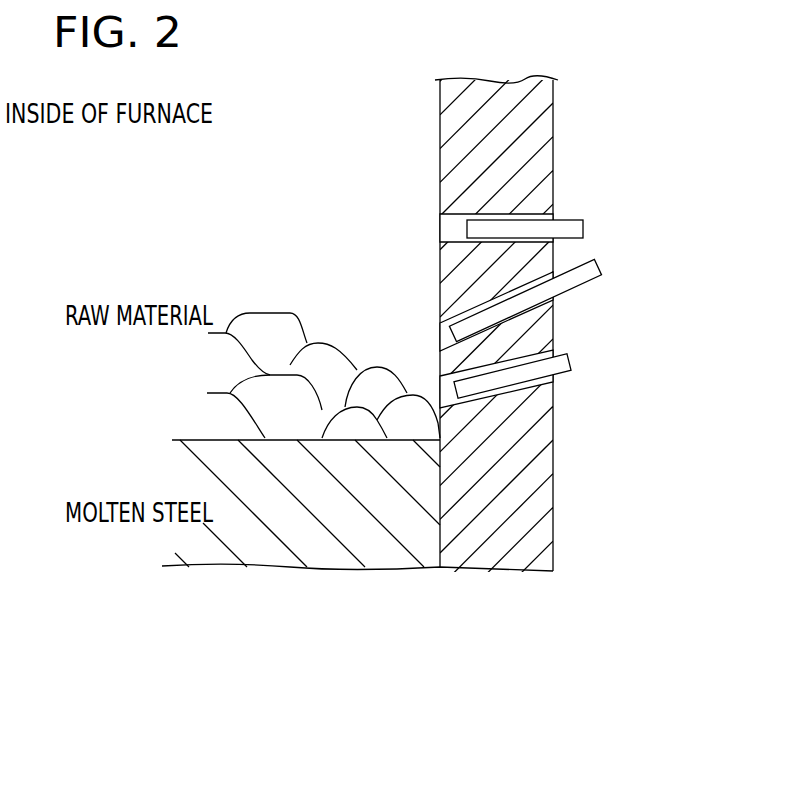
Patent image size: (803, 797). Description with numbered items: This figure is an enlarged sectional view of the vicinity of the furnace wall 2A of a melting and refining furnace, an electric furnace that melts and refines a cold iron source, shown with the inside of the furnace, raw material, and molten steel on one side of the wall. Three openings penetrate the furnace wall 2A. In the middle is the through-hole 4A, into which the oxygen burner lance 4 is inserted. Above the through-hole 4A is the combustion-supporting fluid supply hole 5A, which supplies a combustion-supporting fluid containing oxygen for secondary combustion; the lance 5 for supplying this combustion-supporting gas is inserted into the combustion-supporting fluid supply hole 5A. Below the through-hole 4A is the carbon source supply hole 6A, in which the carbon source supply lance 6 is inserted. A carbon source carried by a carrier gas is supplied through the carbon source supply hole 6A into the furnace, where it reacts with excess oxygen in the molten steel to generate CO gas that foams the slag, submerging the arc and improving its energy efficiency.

The furnace wall 2A is at (447, 122).
The combustion-supporting fluid supply hole 5A is at (450, 219).
The through-hole 4A is at (440, 331).
The carbon source supply hole 6A is at (440, 386).
The lance 5 is at (602, 226).
The oxygen burner lance 4 is at (617, 265).
The carbon source supply lance 6 is at (586, 357).